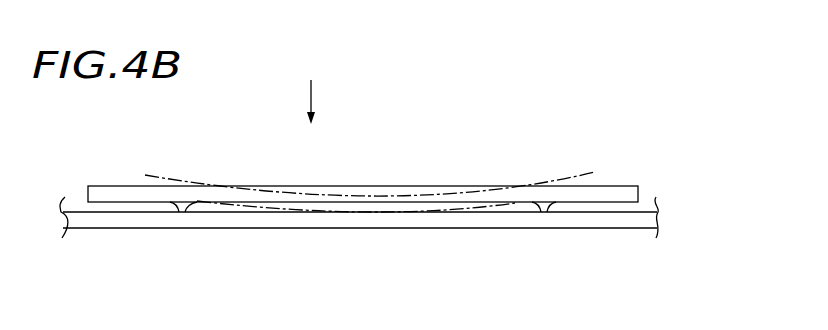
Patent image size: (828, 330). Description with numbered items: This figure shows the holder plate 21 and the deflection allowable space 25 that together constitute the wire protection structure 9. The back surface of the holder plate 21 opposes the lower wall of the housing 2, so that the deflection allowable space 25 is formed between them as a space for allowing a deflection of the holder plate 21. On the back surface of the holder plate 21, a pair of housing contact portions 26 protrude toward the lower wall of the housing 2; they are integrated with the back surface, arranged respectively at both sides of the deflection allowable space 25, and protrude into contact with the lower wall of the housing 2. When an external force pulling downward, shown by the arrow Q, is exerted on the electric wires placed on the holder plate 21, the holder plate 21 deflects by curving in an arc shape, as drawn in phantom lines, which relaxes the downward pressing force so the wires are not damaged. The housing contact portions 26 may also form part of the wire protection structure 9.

The housing 2 is at (617, 220).
The wire protection structure 9 is at (447, 165).
The holder plate 21 is at (620, 196).
The deflection allowable space 25 is at (380, 207).
The housing contact portions 26 is at (179, 212).
The arrow Q is at (311, 94).